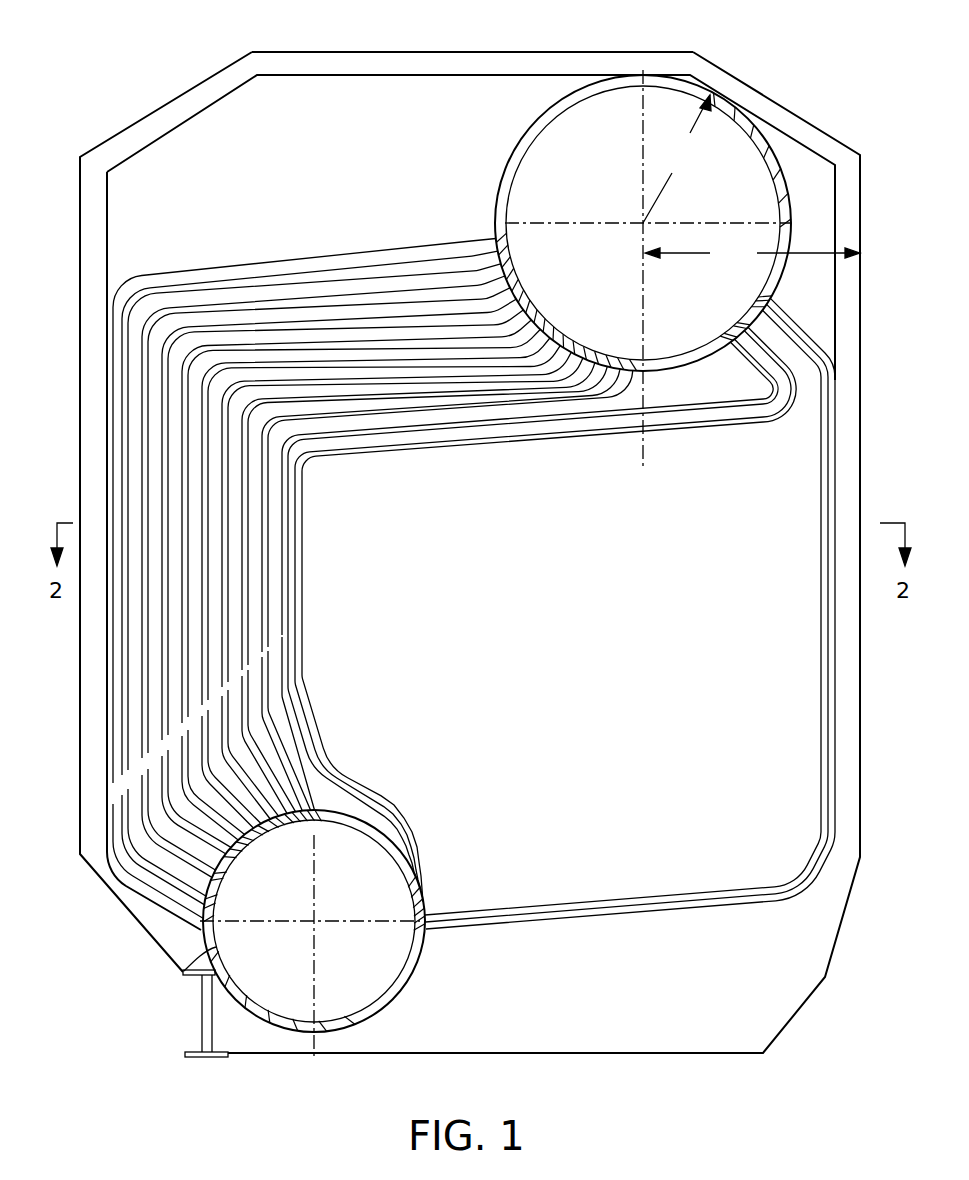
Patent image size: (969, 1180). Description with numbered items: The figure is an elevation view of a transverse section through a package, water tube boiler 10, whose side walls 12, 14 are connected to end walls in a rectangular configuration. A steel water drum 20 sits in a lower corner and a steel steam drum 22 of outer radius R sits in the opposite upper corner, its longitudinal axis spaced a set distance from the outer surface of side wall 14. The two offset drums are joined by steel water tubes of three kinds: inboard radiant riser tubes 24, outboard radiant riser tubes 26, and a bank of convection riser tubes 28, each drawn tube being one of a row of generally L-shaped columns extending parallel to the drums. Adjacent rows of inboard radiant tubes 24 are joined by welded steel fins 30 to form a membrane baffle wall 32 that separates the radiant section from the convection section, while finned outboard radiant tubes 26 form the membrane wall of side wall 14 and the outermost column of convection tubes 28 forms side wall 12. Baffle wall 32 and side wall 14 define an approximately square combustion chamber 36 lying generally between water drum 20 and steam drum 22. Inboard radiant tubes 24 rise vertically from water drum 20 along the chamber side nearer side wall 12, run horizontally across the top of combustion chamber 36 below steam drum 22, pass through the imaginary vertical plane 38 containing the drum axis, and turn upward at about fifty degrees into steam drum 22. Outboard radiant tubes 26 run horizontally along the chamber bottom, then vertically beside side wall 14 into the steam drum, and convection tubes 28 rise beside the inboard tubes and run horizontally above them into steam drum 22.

The water tube boiler 10 is at (790, 77).
The side wall 12 is at (80, 386).
The side wall 14 is at (866, 380).
The water drum 20 is at (180, 975).
The steam drum 22 is at (530, 140).
The inboard radiant riser tubes 24 is at (597, 432).
The outboard radiant riser tubes 26 is at (819, 572).
The convection riser tubes 28 is at (232, 272).
The welded steel fins 30 is at (355, 786).
The baffle wall 32 is at (322, 722).
The combustion chamber 36 is at (582, 711).
The imaginary vertical plane 38 is at (645, 440).